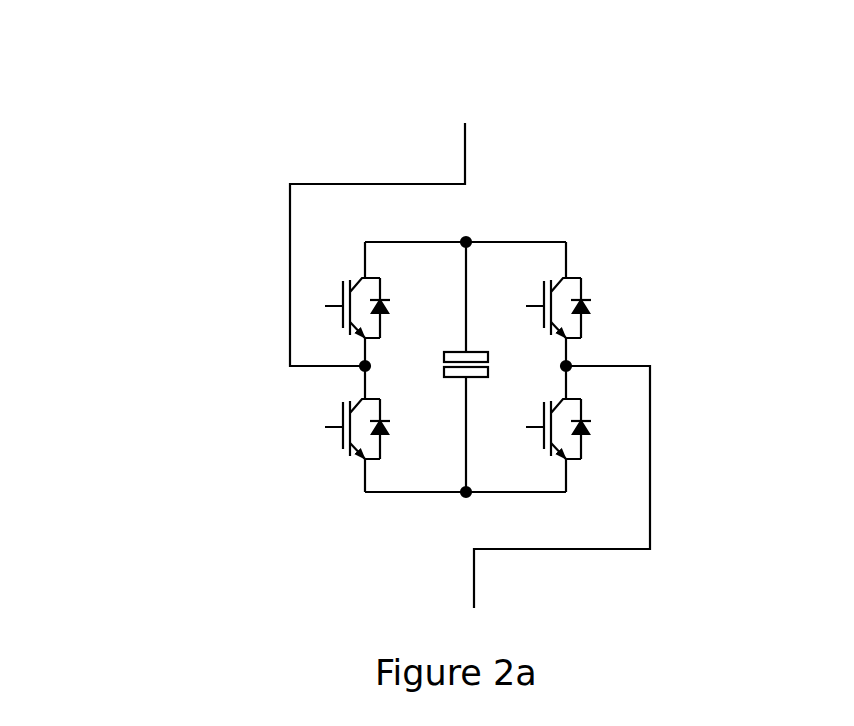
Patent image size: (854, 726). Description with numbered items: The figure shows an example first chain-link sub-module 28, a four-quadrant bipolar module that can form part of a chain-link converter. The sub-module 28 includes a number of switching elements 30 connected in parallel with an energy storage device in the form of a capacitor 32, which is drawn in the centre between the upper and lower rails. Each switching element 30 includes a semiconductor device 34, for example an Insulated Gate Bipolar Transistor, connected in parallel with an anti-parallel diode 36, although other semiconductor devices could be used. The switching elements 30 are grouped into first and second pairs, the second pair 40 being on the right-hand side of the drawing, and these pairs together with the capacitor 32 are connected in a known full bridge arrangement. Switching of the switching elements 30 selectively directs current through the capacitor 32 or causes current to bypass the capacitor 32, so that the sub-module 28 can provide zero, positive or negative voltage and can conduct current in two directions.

The chain-link sub-module 28 is at (170, 151).
The switching element 30 is at (463, 381).
The capacitor 32 is at (447, 351).
The semiconductor device 34 is at (340, 300).
The anti-parallel diode 36 is at (390, 313).
The second pair of switching elements 40 is at (603, 227).